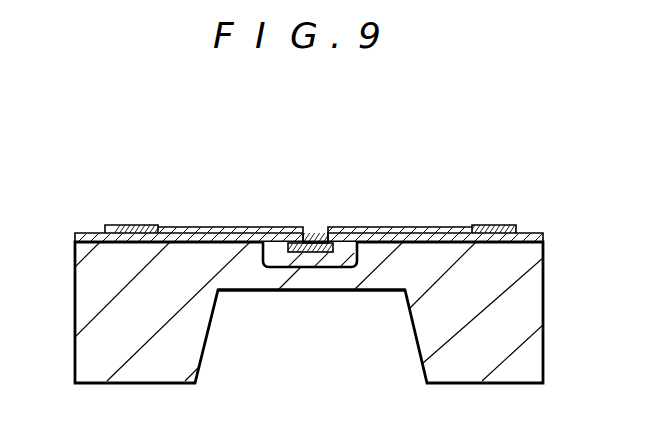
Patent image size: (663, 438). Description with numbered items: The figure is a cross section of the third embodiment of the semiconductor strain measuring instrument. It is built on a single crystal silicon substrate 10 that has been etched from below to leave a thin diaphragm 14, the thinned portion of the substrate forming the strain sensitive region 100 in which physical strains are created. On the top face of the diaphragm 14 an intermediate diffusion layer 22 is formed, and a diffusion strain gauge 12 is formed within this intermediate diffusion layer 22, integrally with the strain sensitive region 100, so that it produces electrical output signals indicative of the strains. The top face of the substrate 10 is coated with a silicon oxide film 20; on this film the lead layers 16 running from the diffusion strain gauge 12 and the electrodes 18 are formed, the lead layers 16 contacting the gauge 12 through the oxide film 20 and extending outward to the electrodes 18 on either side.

The strain sensitive region 100 is at (358, 280).
The single crystal silicon substrate 10 is at (543, 331).
The diffusion strain gauge 12 is at (307, 236).
The diaphragm 14 is at (257, 280).
The lead layer 16 is at (220, 227).
The electrode 18 is at (140, 225).
The silicon oxide film 20 is at (530, 229).
The intermediate diffusion layer 22 is at (353, 260).